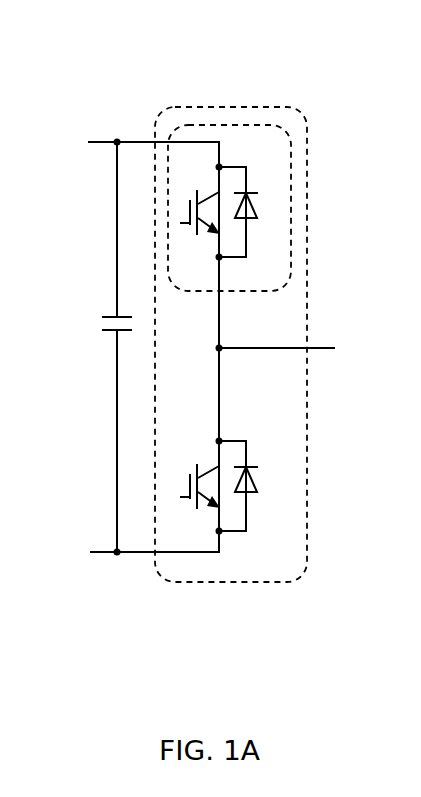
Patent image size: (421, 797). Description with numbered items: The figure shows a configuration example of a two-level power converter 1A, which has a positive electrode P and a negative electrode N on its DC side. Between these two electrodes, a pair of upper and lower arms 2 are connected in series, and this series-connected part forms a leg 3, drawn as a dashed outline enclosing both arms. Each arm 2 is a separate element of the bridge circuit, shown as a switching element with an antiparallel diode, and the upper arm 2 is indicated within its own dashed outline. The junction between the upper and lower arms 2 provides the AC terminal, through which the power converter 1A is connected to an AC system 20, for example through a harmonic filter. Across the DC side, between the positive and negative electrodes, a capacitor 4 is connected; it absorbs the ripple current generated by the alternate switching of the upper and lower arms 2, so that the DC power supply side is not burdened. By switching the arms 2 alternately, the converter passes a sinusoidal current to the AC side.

The 2-level power converter 1A is at (142, 116).
The arm 2 is at (291, 163).
The leg 3 is at (296, 576).
The capacitor 4 is at (98, 320).
The AC system 20 is at (357, 330).